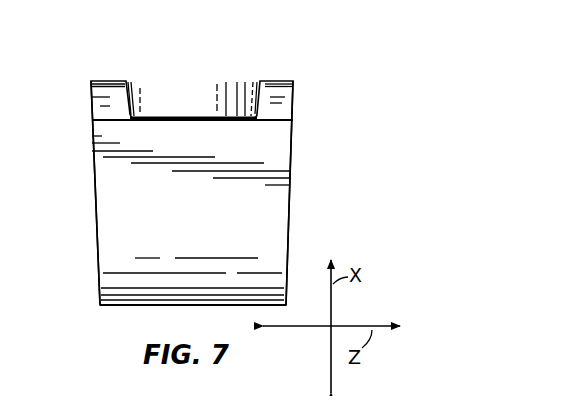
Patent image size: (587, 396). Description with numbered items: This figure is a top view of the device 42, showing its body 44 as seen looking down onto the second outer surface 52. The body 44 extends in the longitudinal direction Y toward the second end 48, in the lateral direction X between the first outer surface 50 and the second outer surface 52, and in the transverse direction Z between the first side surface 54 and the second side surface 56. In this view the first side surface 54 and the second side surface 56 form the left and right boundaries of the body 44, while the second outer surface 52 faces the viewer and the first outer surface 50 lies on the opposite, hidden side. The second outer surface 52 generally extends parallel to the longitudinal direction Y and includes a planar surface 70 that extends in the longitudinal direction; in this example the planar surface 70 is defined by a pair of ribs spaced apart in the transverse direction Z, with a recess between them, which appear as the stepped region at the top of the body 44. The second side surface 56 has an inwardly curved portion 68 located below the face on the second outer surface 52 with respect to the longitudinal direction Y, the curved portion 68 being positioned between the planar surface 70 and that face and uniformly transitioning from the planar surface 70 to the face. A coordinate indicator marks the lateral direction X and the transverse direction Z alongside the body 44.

The device 42 is at (313, 65).
The body 44 is at (116, 212).
The second end 48 is at (191, 204).
The first outer surface 50 is at (118, 315).
The second outer surface 52 is at (172, 74).
The first side surface 54 is at (82, 160).
The second side surface 56 is at (299, 201).
The inwardly curved portion 68 is at (102, 101).
The planar surface 70 is at (226, 80).